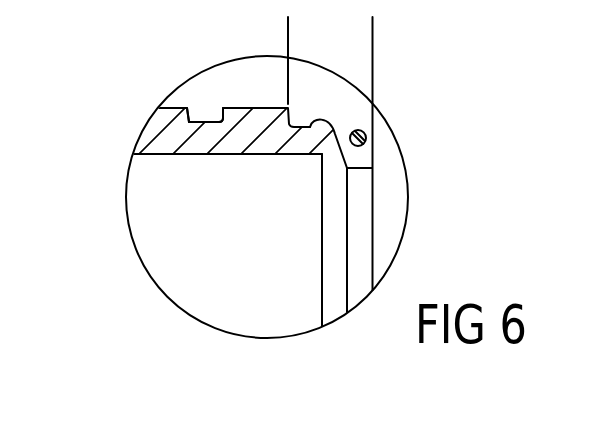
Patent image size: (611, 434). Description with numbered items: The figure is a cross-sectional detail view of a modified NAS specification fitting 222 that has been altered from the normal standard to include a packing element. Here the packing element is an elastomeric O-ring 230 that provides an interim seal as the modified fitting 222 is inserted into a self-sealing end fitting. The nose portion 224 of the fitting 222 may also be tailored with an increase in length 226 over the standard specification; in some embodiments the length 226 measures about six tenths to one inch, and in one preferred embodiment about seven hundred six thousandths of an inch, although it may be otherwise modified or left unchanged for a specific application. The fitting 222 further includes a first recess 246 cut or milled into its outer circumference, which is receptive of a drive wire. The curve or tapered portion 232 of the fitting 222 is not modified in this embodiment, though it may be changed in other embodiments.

The modified NAS 1760 specification fitting 222 is at (452, 65).
The nose portion 224 is at (180, 154).
The length 226 is at (373, 28).
The elastomeric O-ring 230 is at (366, 141).
The curve or tapered portion 232 is at (335, 134).
The first recess 246 is at (201, 122).